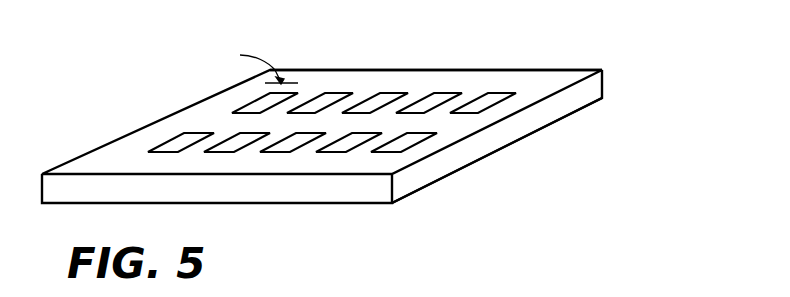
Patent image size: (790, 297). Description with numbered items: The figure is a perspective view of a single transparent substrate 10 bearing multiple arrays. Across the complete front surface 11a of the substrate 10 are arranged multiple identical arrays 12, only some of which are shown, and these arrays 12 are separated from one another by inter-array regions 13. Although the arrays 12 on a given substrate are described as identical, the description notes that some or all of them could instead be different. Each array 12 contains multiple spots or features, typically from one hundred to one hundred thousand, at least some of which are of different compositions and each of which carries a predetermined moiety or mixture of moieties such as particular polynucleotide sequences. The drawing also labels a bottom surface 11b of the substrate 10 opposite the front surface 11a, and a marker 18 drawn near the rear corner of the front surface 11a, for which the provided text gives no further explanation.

The transparent substrate 10 is at (477, 162).
The front surface 11a is at (568, 70).
The bottom surface 11b is at (557, 121).
The array 12 is at (178, 148).
The inter-array region 13 is at (305, 148).
The direction arrow 18 is at (254, 64).